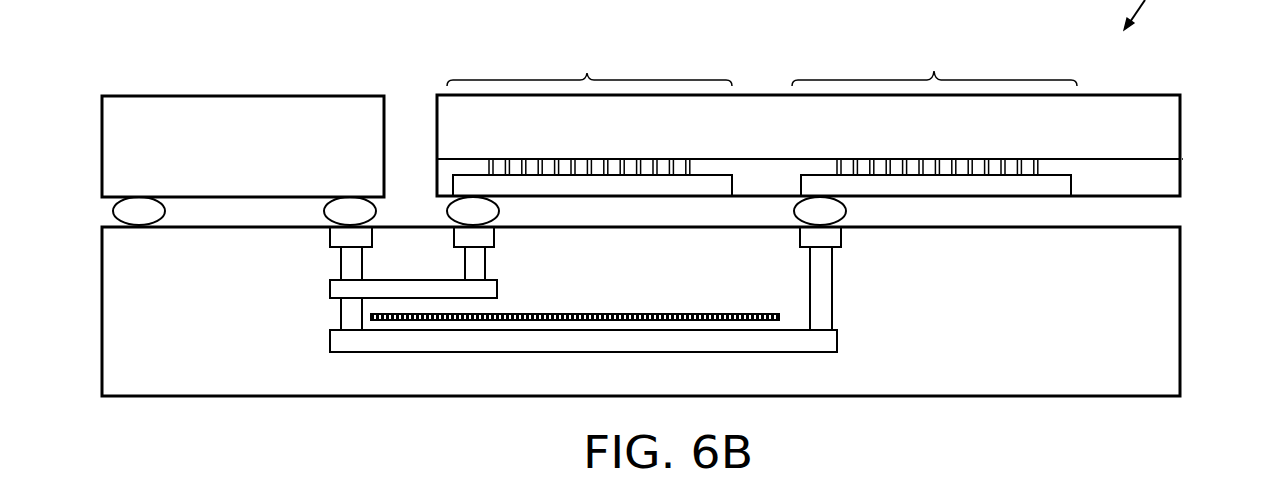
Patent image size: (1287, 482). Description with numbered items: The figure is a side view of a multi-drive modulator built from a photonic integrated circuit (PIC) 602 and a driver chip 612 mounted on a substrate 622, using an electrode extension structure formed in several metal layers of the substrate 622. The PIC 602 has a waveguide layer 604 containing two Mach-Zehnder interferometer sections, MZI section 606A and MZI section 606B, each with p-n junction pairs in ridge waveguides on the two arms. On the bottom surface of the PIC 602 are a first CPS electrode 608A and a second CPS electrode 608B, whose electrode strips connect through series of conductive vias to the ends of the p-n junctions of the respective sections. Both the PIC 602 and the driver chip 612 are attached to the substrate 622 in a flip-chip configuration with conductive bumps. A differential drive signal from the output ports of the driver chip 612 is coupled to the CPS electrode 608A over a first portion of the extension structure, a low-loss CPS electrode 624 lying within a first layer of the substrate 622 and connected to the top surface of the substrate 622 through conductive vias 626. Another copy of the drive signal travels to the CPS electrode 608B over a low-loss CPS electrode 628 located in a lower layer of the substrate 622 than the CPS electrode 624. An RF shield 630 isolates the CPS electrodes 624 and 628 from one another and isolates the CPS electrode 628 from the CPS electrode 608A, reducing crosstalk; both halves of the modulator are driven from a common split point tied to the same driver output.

The photonic integrated circuit 602 is at (1160, 130).
The waveguide layer 604 is at (1186, 159).
The MZI section 606A is at (589, 64).
The MZI section 606B is at (934, 62).
The first CPS electrode 608A is at (670, 197).
The second CPS electrode 608B is at (1000, 197).
The driver chip 612 is at (362, 134).
The substrate 622 is at (1147, 265).
The low-loss CPS electrode 624 is at (330, 289).
The conductive vias 626 is at (341, 258).
The low-loss CPS electrode 628 is at (685, 352).
The RF shield 630 is at (750, 312).